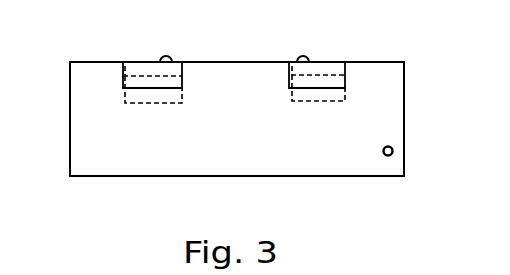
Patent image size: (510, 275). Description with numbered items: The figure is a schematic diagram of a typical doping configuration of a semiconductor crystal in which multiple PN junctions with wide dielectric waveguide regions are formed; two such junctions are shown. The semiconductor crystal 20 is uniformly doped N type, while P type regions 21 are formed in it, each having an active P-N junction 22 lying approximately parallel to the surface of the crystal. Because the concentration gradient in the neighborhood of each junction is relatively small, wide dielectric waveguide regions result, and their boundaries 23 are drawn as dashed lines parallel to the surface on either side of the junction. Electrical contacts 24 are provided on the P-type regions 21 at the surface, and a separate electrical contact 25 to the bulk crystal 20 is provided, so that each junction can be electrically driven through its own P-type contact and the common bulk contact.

The semiconductor crystal 20 is at (75, 123).
The P type regions 21 is at (137, 68).
The active P-N junction 22 is at (178, 88).
The dielectric waveguide region boundaries 23 is at (134, 78).
The electrical contacts 24 is at (301, 56).
The electrical contact to the bulk crystal 25 is at (394, 150).